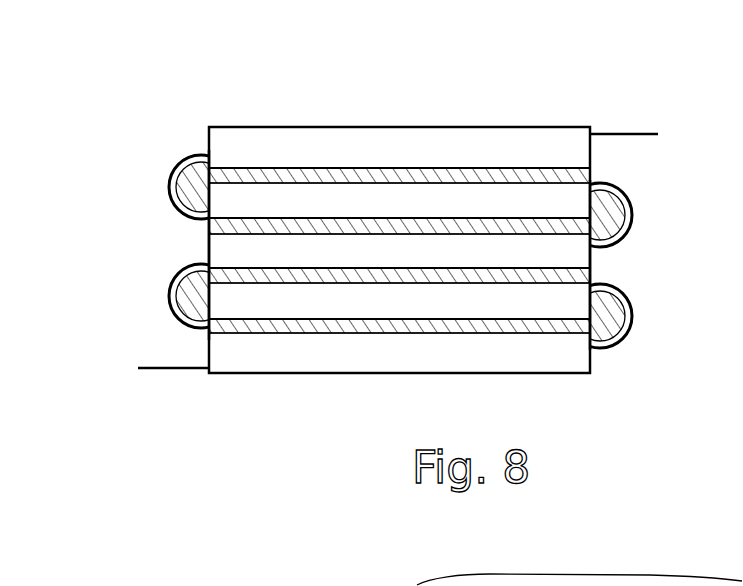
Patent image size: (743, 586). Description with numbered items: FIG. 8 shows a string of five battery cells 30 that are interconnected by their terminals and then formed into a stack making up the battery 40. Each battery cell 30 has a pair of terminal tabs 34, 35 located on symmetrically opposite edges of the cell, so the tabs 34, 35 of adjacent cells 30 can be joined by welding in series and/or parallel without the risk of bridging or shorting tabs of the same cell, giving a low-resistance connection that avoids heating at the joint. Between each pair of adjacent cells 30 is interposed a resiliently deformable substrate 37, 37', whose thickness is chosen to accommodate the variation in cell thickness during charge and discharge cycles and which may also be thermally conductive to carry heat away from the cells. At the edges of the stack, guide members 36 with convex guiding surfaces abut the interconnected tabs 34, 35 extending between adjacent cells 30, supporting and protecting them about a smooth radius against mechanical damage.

The battery cell 30 is at (399, 250).
The tab 34 is at (166, 376).
The tab 35 is at (630, 128).
The guide member 36 is at (180, 178).
The resiliently deformable substrate 37 is at (399, 360).
The adhesive layer 37' is at (399, 142).
The battery 40 is at (331, 406).